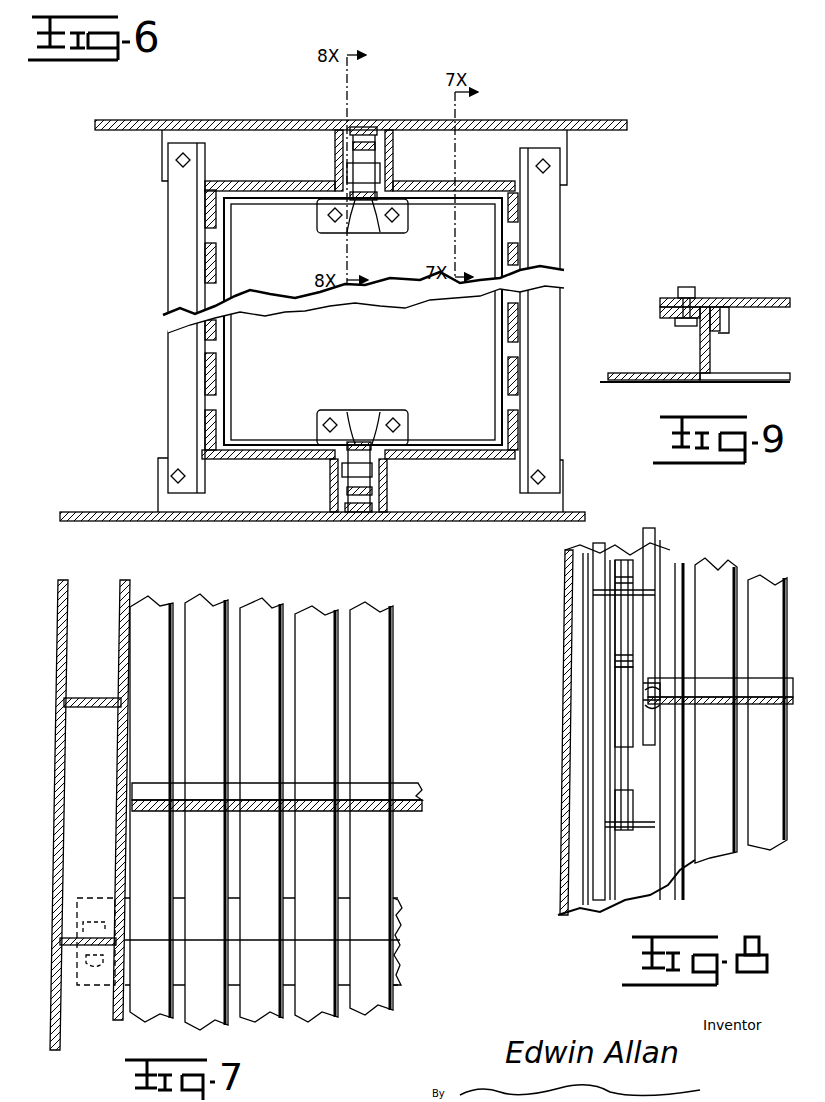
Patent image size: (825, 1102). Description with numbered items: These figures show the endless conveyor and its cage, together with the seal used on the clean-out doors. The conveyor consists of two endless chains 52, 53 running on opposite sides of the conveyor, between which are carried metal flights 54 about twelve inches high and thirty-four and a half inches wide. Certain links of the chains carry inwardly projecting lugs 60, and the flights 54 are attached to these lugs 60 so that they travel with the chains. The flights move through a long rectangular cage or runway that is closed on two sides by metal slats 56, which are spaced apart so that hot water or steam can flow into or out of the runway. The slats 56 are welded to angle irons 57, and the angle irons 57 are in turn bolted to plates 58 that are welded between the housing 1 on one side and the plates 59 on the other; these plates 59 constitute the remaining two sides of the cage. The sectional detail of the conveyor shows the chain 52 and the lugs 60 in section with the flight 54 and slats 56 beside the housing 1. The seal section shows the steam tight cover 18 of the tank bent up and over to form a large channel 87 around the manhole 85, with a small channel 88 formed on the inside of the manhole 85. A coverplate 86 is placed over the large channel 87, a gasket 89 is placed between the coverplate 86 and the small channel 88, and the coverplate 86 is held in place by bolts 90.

In FIG. 6, the housing 1 is at (225, 118).
In FIG. 8, the housing 1 is at (565, 768).
In FIG. 7, the housing 1 is at (58, 628).
In FIG. 9, the steam tight cover 18 is at (655, 381).
In FIG. 6, the endless chain 52 is at (366, 158).
In FIG. 8, the endless chain 52 is at (655, 548).
In FIG. 6, the endless chain 53 is at (372, 468).
In FIG. 6, the metal flights 54 is at (480, 312).
In FIG. 8, the metal flights 54 is at (772, 706).
In FIG. 7, the metal flights 54 is at (397, 790).
In FIG. 6, the metal slats 56 is at (216, 270).
In FIG. 8, the metal slats 56 is at (720, 572).
In FIG. 7, the metal slats 56 is at (378, 705).
In FIG. 6, the angle irons 57 is at (172, 240).
In FIG. 7, the angle irons 57 is at (400, 907).
In FIG. 6, the plates 58 is at (162, 150).
In FIG. 7, the plates 58 is at (83, 698).
In FIG. 6, the plates 59 is at (283, 181).
In FIG. 7, the plates 59 is at (120, 785).
In FIG. 6, the inwardly projecting lugs 60 is at (372, 236).
In FIG. 8, the inwardly projecting lugs 60 is at (683, 687).
In FIG. 9, the manhole 85 is at (736, 382).
In FIG. 9, the coverplate 86 is at (745, 299).
In FIG. 9, the large channel 87 is at (700, 346).
In FIG. 9, the small channel 88 is at (730, 321).
In FIG. 9, the gasket 89 is at (711, 306).
In FIG. 9, the bolts 90 is at (683, 290).